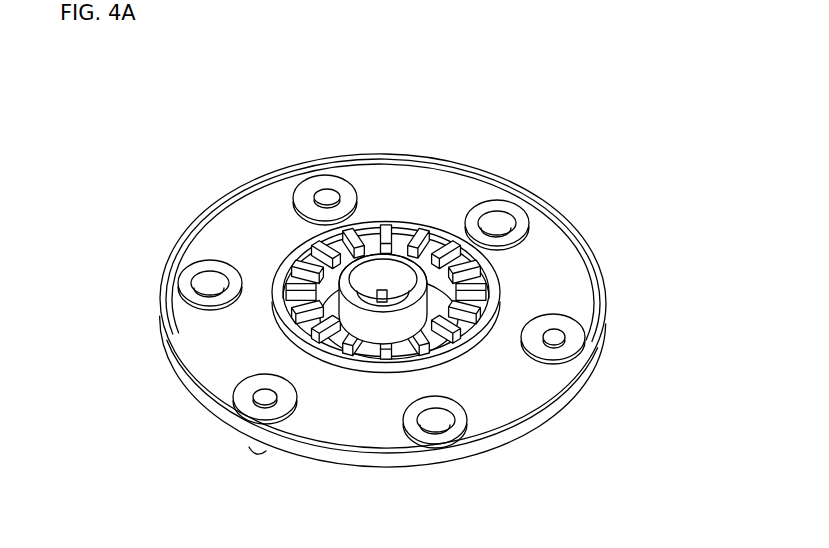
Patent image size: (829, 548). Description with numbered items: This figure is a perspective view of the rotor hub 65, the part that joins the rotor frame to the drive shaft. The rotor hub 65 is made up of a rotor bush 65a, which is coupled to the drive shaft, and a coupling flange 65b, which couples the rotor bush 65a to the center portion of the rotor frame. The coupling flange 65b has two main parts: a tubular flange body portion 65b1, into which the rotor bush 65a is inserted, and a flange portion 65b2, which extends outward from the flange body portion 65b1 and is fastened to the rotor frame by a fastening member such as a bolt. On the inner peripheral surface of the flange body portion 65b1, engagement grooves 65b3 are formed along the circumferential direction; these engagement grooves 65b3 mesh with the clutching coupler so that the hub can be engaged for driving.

The rotor hub 65 is at (149, 118).
The rotor bush 65a is at (480, 228).
The coupling flange 65b is at (539, 304).
The flange body portion 65b1 is at (491, 290).
The flange portion 65b2 is at (540, 383).
The engagement grooves 65b3 is at (444, 345).